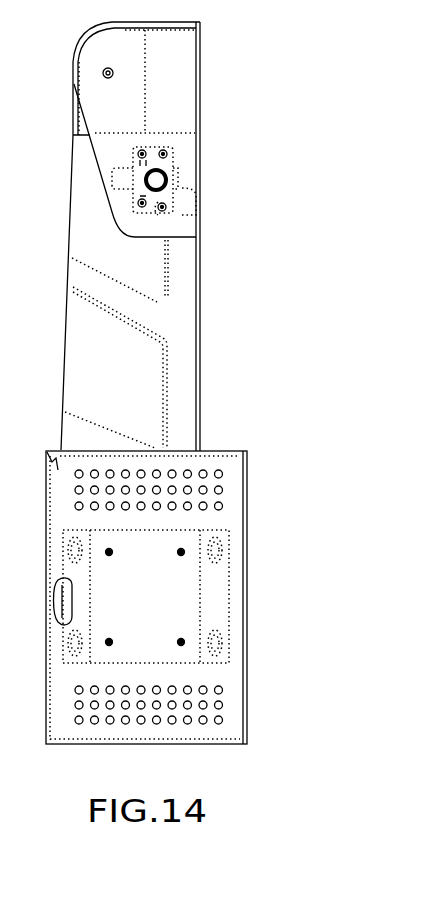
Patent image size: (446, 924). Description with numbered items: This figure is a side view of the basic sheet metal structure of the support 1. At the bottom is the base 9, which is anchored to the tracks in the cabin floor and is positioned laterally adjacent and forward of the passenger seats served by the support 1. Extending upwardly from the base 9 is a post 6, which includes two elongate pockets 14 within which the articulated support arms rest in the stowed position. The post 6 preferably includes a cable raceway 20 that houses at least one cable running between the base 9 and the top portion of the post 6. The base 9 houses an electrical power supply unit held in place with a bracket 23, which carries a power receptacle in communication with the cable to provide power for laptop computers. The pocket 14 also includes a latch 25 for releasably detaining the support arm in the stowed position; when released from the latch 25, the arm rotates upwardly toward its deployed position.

The support 1 is at (183, 375).
The post 6 is at (201, 280).
The base 9 is at (248, 553).
The elongate pocket 14 is at (114, 381).
The cable raceway 20 is at (174, 318).
The bracket 23 is at (180, 602).
The latch 25 is at (185, 178).